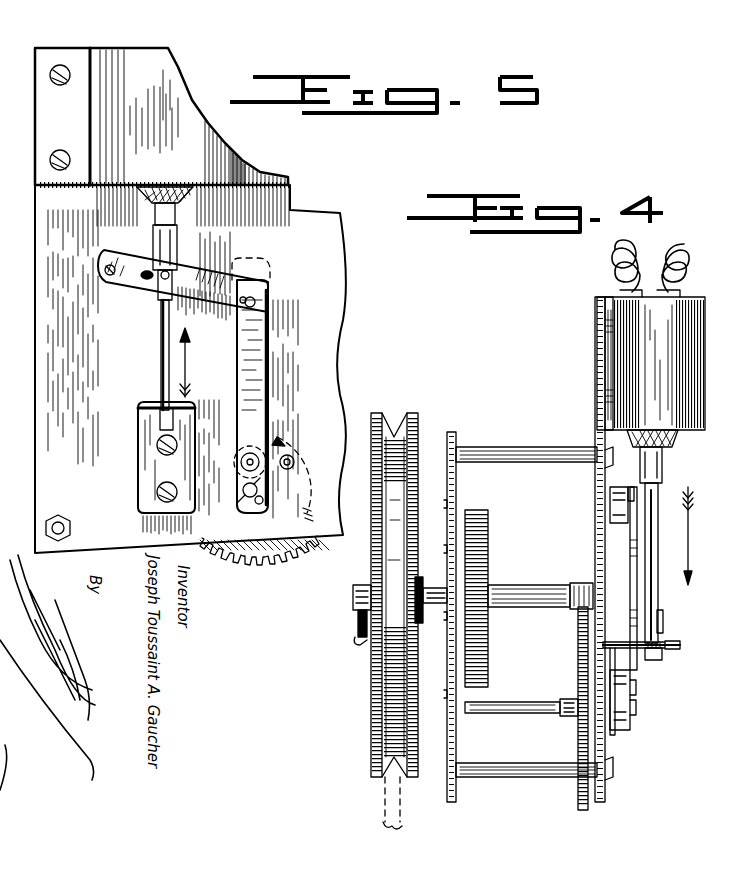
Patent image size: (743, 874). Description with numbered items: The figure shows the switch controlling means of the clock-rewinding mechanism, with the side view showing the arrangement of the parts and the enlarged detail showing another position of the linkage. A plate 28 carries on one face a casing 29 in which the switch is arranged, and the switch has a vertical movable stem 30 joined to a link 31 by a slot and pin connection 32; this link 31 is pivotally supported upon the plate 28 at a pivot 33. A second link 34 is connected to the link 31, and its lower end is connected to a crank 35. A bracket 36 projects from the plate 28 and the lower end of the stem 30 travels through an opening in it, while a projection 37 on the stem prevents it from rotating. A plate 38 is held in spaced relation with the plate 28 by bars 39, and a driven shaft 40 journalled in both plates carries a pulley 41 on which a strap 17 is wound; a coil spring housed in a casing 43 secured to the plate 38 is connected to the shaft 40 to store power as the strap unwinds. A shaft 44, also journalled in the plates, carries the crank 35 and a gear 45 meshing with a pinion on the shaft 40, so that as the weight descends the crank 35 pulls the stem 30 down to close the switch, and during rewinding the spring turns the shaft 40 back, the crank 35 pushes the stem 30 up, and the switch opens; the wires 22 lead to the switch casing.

In FIG. 4, the strap 17 is at (400, 800).
In FIG. 4, the electric wires 22 is at (640, 245).
In FIG. 5, the plate 28 is at (330, 327).
In FIG. 4, the plate 28 is at (598, 318).
In FIG. 5, the casing 29 is at (161, 116).
In FIG. 4, the casing 29 is at (660, 370).
In FIG. 5, the stem 30 is at (160, 350).
In FIG. 4, the stem 30 is at (660, 570).
In FIG. 5, the link 31 is at (215, 285).
In FIG. 4, the link 31 is at (612, 497).
In FIG. 5, the slot and pin connection 32 is at (187, 276).
In FIG. 5, the pivot 33 is at (112, 275).
In FIG. 5, the link 34 is at (270, 392).
In FIG. 4, the link 34 is at (637, 598).
In FIG. 5, the crank 35 is at (257, 507).
In FIG. 4, the crank 35 is at (630, 712).
In FIG. 5, the bracket 36 is at (148, 445).
In FIG. 4, the bracket 36 is at (682, 647).
In FIG. 5, the projection 37 is at (185, 386).
In FIG. 4, the projection 37 is at (663, 622).
In FIG. 4, the plate 38 is at (458, 432).
In FIG. 4, the bars 39 is at (500, 452).
In FIG. 4, the driven shaft 40 is at (515, 590).
In FIG. 4, the pulley 41 is at (375, 552).
In FIG. 4, the casing 43 is at (475, 547).
In FIG. 4, the shaft 44 is at (503, 708).
In FIG. 4, the gear 45 is at (578, 636).